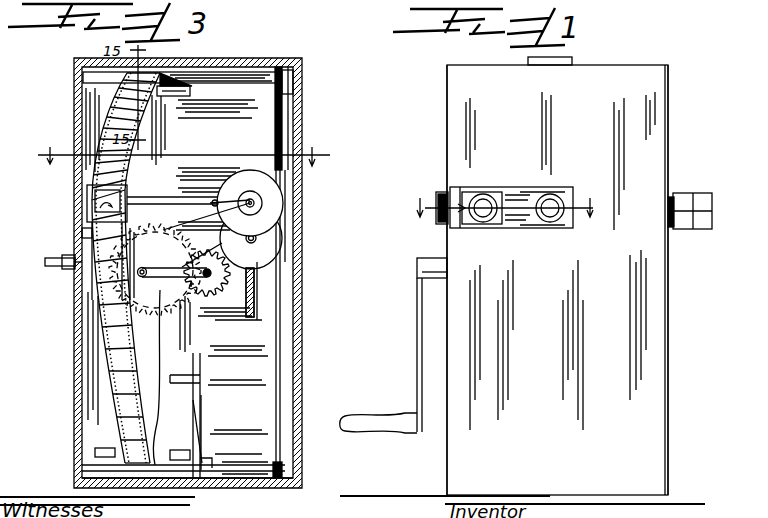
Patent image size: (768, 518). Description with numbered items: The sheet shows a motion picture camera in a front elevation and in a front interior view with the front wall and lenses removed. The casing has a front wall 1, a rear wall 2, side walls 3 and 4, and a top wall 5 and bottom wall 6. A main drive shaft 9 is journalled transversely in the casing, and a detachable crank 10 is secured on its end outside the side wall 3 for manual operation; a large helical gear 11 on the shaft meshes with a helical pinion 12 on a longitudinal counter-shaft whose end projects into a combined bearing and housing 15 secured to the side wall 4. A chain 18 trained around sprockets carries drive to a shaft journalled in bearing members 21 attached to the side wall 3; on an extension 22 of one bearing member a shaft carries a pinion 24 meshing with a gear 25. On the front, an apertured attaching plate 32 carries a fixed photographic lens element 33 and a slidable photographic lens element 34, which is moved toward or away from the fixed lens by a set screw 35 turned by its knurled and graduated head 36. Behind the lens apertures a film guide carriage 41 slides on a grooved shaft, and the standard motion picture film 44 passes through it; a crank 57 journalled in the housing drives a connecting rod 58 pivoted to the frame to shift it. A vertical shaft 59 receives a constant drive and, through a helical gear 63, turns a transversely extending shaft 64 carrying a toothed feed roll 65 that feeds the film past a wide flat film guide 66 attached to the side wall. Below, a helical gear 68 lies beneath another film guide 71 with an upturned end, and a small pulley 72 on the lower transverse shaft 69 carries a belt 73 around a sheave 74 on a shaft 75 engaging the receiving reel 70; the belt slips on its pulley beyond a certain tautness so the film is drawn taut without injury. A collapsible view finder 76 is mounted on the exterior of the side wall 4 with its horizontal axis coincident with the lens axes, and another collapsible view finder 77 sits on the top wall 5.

In FIG. 1, the front wall 1 is at (557, 280).
In FIG. 3, the rear wall 2 is at (229, 429).
In FIG. 3, the side wall 3 is at (82, 208).
In FIG. 1, the side wall 3 is at (441, 147).
In FIG. 3, the side wall 4 is at (312, 365).
In FIG. 1, the side wall 4 is at (677, 140).
In FIG. 3, the top wall 5 is at (233, 71).
In FIG. 3, the bottom wall 6 is at (285, 496).
In FIG. 3, the main drive shaft 9 is at (57, 268).
In FIG. 1, the detachable crank 10 is at (420, 340).
In FIG. 3, the large helical gear 11 is at (248, 305).
In FIG. 1, the helical pinion 12 is at (505, 207).
In FIG. 3, the combined bearing and housing 15 is at (277, 192).
In FIG. 3, the chain 18 is at (287, 231).
In FIG. 3, the bearing members 21 is at (92, 300).
In FIG. 3, the extension 22 is at (155, 270).
In FIG. 3, the pinion 24 is at (222, 308).
In FIG. 3, the gear 25 is at (182, 306).
In FIG. 1, the attaching plate 32 is at (533, 222).
In FIG. 1, the photographic lens element 33 is at (552, 193).
In FIG. 1, the photographic lens element 34 is at (503, 193).
In FIG. 1, the set screw 35 is at (468, 197).
In FIG. 1, the knurled and graduated head 36 is at (443, 217).
In FIG. 3, the film guide carriage 41 is at (87, 233).
In FIG. 3, the motion picture film 44 is at (107, 193).
In FIG. 3, the crank 57 is at (249, 199).
In FIG. 3, the connecting rod 58 is at (148, 197).
In FIG. 3, the shaft 59 is at (282, 338).
In FIG. 3, the helical gear 63 is at (290, 77).
In FIG. 3, the transversely extending shaft 64 is at (279, 68).
In FIG. 3, the toothed feed roll 65 is at (167, 73).
In FIG. 3, the film guide 66 is at (187, 97).
In FIG. 3, the helical gear 68 is at (287, 465).
In FIG. 3, the lower transverse shaft 69 is at (240, 463).
In FIG. 3, the receiving reel 70 is at (159, 377).
In FIG. 3, the film guide 71 is at (178, 458).
In FIG. 3, the small pulley 72 is at (203, 463).
In FIG. 3, the belt 73 is at (198, 417).
In FIG. 3, the sheave 74 is at (202, 388).
In FIG. 3, the shaft 75 is at (182, 376).
In FIG. 1, the collapsible view finder 76 is at (693, 195).
In FIG. 1, the collapsible view finder 77 is at (571, 60).